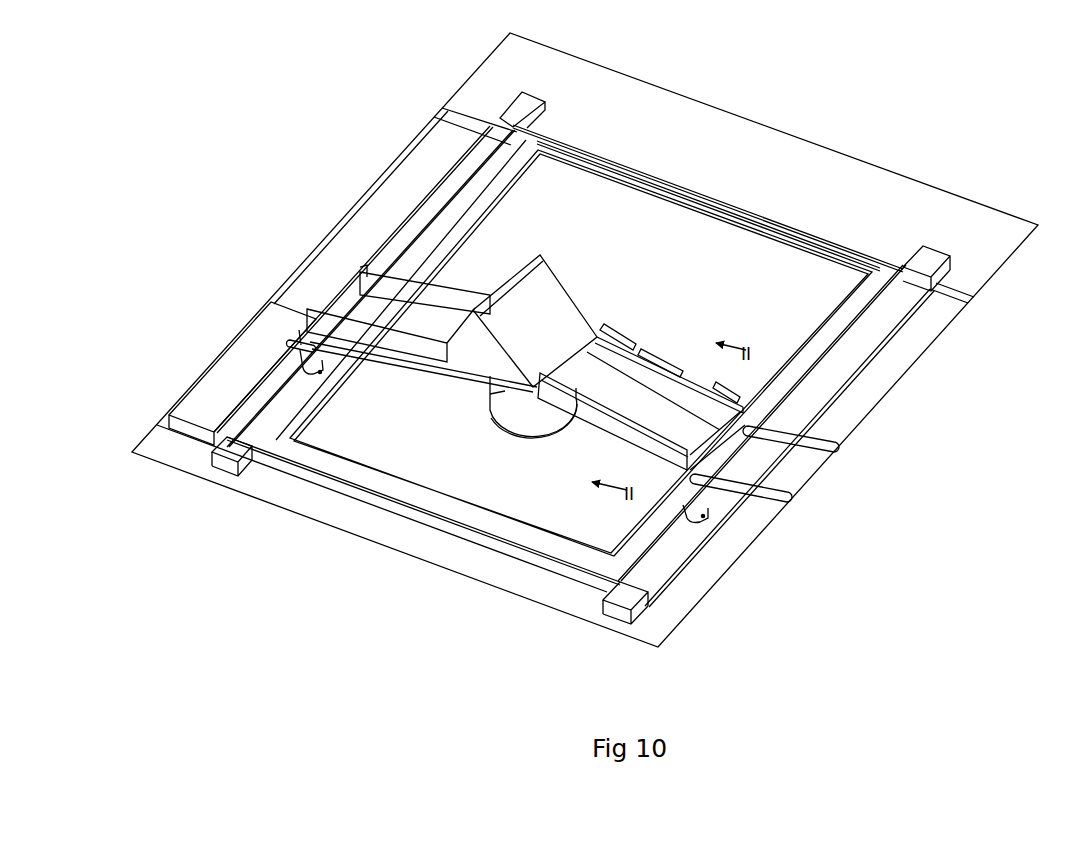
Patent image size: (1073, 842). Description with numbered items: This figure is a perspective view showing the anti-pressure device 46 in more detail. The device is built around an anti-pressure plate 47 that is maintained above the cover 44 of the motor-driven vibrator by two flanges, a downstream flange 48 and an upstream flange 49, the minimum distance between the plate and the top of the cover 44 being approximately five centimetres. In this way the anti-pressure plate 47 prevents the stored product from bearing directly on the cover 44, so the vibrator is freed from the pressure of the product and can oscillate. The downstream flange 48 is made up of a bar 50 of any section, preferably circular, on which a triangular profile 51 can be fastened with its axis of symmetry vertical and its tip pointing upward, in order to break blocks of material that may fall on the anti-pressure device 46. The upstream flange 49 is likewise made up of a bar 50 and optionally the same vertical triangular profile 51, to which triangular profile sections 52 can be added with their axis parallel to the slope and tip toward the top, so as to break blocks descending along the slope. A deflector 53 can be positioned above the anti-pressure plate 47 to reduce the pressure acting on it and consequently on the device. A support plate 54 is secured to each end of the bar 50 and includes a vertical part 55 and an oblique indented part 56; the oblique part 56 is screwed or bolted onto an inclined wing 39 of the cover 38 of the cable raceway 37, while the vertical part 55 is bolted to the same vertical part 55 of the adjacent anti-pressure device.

The cable raceway 37 is at (240, 462).
The cover 38 is at (522, 139).
The inclined wing 39 is at (650, 573).
The cover of the motor-driven vibrator 44 is at (519, 401).
The anti-pressure device 46 is at (681, 265).
The anti-pressure plate 47 is at (481, 380).
The downstream flange 48 is at (599, 441).
The upstream flange 49 is at (651, 347).
The bar 50 is at (502, 346).
The triangular profile 51 is at (431, 358).
The triangular profile section 52 is at (625, 336).
The deflector 53 is at (597, 337).
The support plate 54 is at (762, 426).
The vertical part 55 is at (300, 340).
The oblique indented part 56 is at (326, 373).